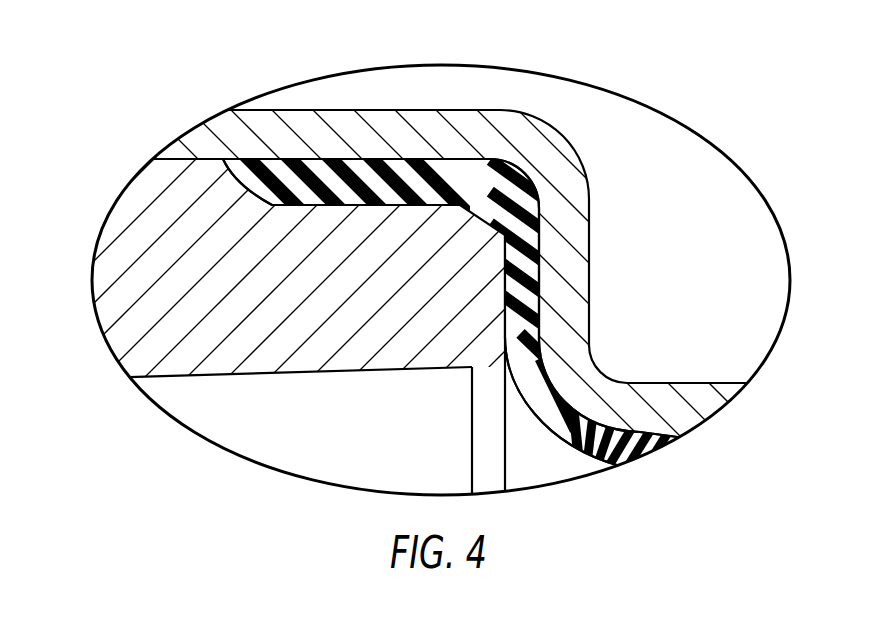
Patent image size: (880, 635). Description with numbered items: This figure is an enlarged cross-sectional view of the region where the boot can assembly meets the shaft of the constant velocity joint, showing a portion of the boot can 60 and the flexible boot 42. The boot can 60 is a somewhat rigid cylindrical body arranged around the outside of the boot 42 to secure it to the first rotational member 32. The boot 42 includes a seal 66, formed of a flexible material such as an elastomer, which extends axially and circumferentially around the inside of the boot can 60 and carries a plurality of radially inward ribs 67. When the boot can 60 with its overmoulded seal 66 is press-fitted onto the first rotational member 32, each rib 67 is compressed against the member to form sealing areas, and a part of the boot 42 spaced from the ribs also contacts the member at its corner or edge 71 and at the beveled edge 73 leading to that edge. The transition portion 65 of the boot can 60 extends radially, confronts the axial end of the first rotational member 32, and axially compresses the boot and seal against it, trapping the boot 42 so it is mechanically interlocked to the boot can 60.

The first rotational member 32 is at (130, 295).
The flexible CV joint boot 42 is at (641, 447).
The boot can 60 is at (448, 265).
The transition portion 65 is at (573, 271).
The seal 66 is at (431, 269).
The ribs 67 is at (282, 207).
The corner or edge 71 is at (507, 323).
The beveled edge 73 is at (508, 183).